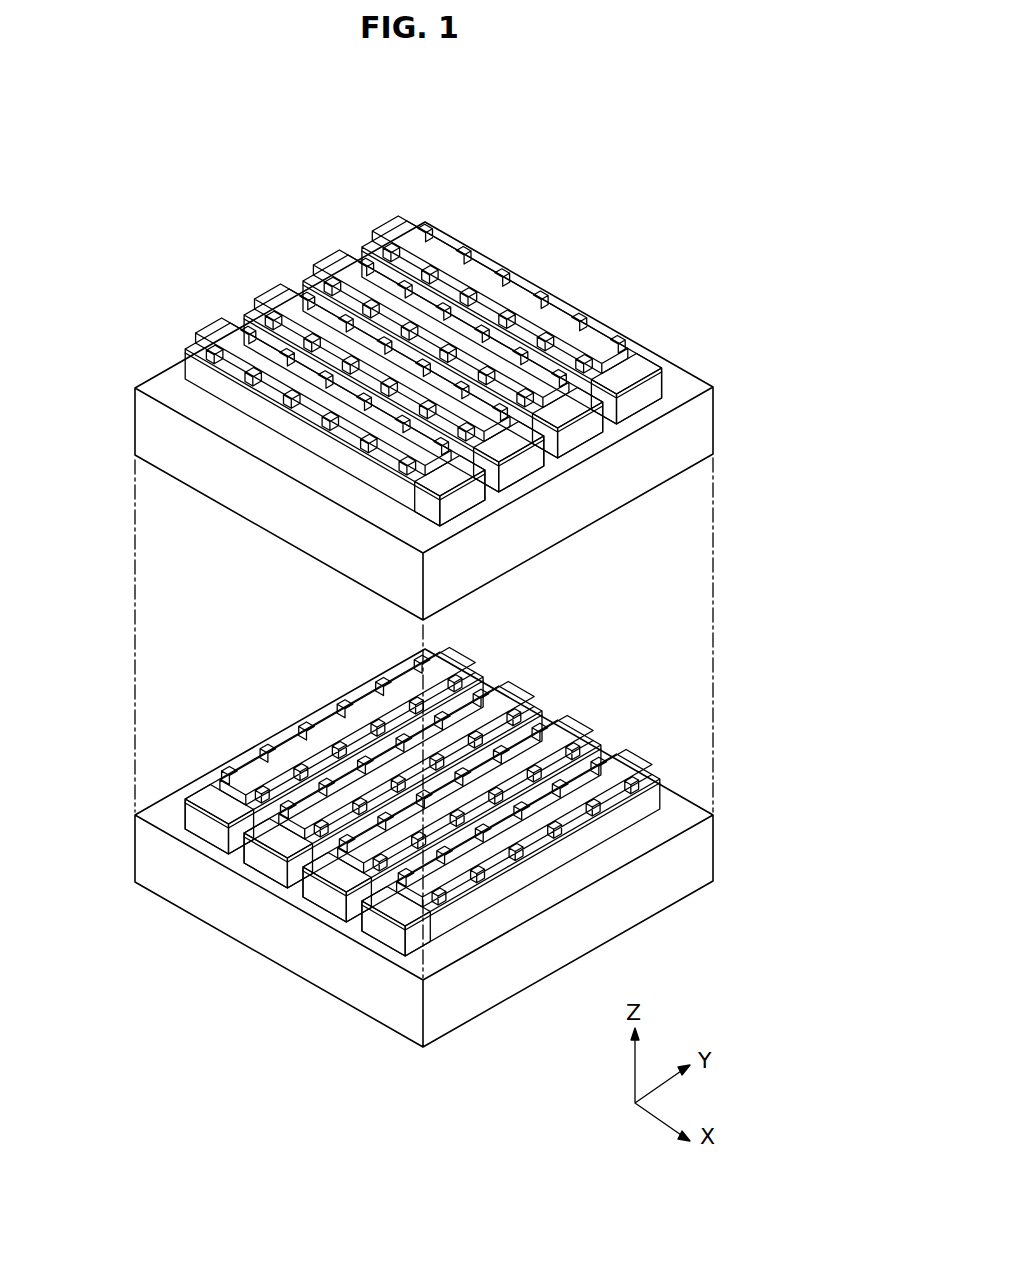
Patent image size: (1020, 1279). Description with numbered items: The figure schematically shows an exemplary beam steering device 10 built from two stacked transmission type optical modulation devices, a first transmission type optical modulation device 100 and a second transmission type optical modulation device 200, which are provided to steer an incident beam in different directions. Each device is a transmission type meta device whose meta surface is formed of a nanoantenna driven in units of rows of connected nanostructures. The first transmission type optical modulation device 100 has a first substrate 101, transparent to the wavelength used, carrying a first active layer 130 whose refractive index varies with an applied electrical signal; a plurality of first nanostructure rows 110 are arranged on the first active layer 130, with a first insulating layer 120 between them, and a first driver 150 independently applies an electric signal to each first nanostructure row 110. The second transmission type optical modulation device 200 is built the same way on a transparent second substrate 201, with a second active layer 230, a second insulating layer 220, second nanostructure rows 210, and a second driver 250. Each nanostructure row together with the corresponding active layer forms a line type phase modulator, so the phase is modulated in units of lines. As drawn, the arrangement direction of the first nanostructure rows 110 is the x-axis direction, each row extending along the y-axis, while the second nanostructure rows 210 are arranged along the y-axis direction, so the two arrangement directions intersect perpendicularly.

The beam steering device 10 is at (677, 233).
The first transmission type optical modulation device 100 is at (271, 724).
The first substrate 101 is at (707, 851).
The first nanostructure row 110 is at (633, 755).
The first insulating layer 120 is at (657, 793).
The first active layer 130 is at (660, 796).
The first driver 150 is at (383, 930).
The second transmission type optical modulation device 200 is at (263, 272).
The second substrate 201 is at (705, 423).
The second nanostructure row 210 is at (213, 332).
The second insulating layer 220 is at (183, 348).
The second active layer 230 is at (182, 363).
The second driver 250 is at (466, 500).